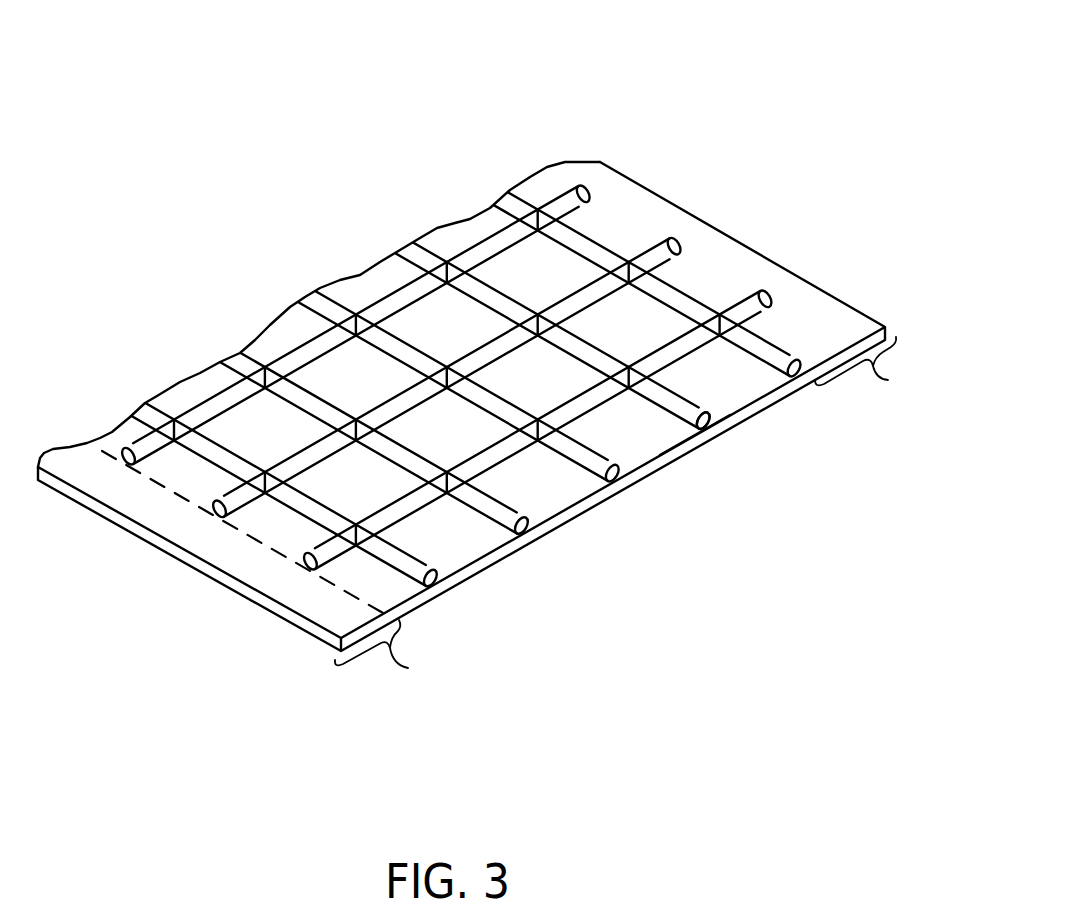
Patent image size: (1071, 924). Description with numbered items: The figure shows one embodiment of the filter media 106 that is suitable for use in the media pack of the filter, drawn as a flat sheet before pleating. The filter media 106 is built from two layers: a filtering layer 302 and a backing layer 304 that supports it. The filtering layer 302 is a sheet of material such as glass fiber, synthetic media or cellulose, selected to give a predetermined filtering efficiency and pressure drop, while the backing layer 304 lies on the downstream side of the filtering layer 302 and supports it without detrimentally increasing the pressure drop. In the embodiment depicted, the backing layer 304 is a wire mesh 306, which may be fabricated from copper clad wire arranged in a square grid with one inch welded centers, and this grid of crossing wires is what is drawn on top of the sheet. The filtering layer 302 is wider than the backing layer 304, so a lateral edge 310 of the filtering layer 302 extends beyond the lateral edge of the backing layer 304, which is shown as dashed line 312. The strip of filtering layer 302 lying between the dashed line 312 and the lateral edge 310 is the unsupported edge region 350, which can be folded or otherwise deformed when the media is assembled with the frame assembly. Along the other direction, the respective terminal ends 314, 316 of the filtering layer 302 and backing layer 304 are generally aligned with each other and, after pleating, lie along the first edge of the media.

The filter media 106 is at (470, 355).
The filtering layer 302 is at (398, 594).
The backing layer 304 is at (522, 506).
The wire mesh 306 is at (696, 291).
The lateral edge 310 is at (824, 276).
The lateral edge (dashed line) 312 is at (283, 557).
The terminal end 314 is at (700, 436).
The terminal end 316 is at (709, 415).
The unsupported edge region 350 is at (638, 516).